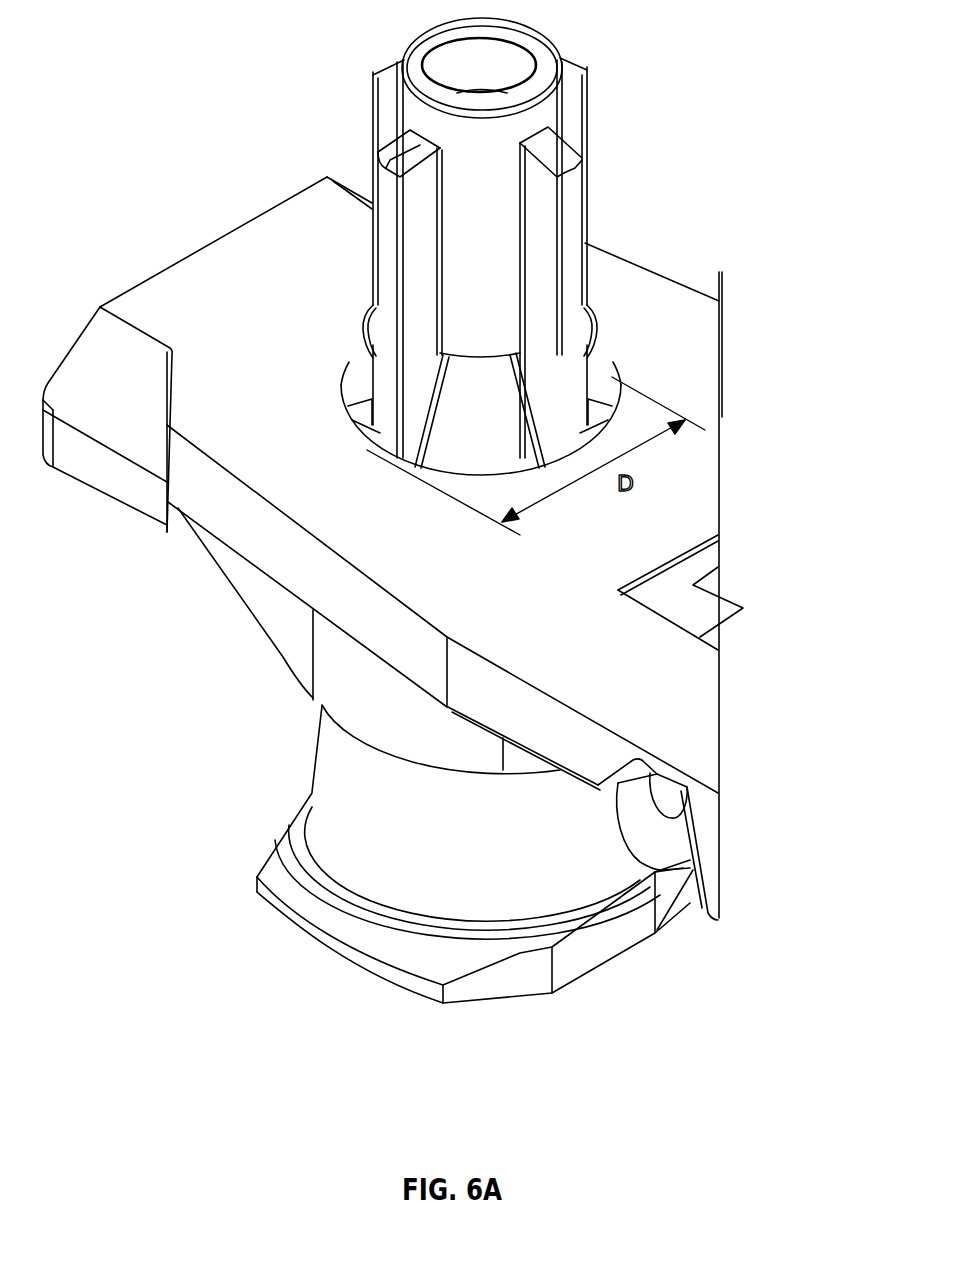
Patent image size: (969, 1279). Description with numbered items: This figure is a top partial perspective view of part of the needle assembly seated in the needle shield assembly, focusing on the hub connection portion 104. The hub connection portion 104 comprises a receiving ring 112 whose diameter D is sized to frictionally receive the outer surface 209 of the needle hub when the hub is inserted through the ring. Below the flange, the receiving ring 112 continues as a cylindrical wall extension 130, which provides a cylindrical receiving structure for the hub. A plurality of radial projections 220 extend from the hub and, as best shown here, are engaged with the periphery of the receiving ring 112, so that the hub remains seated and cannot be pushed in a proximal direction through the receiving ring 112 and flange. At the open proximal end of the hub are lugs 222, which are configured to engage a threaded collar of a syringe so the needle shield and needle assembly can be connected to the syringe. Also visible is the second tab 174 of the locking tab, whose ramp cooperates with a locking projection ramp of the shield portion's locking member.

The hub connection portion 104 is at (143, 172).
The receiving ring 112 is at (343, 422).
The cylindrical wall extension 130 is at (417, 722).
The second tab 174 is at (116, 418).
The outer surface 209 is at (417, 822).
The radial projections 220 is at (376, 435).
The lugs 222 is at (257, 878).